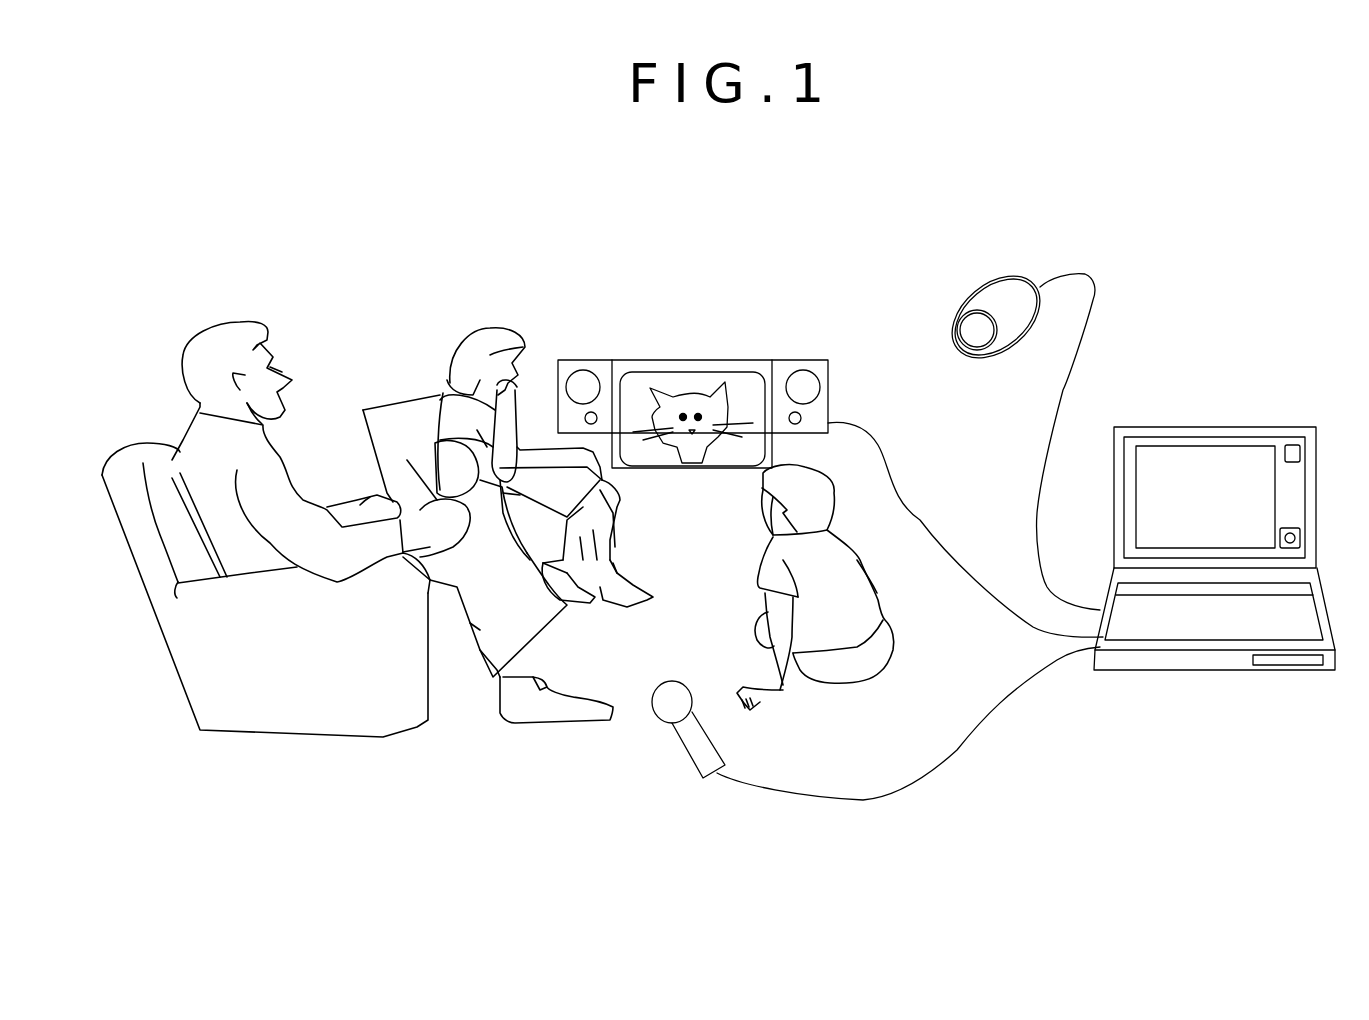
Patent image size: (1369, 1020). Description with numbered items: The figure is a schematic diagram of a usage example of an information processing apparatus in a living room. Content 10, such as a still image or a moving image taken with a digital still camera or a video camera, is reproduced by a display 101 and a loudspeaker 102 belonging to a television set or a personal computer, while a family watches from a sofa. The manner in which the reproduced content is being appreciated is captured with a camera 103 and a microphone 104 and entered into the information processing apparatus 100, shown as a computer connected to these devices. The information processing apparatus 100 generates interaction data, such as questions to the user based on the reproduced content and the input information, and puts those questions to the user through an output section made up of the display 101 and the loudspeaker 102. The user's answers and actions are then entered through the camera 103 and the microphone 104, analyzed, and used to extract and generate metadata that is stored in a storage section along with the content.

The content 10 is at (655, 375).
The information processing apparatus 100 is at (1215, 427).
The display 101 is at (724, 375).
The loudspeaker 102 is at (810, 372).
The camera 103 is at (1003, 272).
The microphone 104 is at (680, 752).